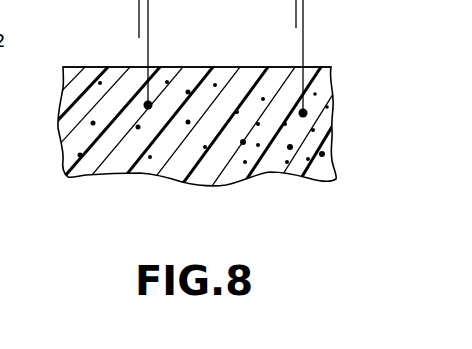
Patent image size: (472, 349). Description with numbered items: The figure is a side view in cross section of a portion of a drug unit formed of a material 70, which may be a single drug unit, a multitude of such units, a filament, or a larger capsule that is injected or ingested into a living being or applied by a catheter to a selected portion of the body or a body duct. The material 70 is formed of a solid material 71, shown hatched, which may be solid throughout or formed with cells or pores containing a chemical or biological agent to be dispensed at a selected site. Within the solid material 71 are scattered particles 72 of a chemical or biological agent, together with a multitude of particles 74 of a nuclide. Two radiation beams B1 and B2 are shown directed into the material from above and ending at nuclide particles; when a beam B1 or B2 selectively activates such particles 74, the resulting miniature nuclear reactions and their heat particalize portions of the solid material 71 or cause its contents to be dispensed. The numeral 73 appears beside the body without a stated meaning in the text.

The material 70 is at (331, 93).
The solid material 71 is at (201, 68).
The particles of a chemical or biological agent 72 is at (326, 110).
The embedded particles 73 is at (170, 122).
The particles of a nuclide 74 is at (305, 115).
The radiation beam B1 is at (150, 29).
The radiation beam B2 is at (305, 28).